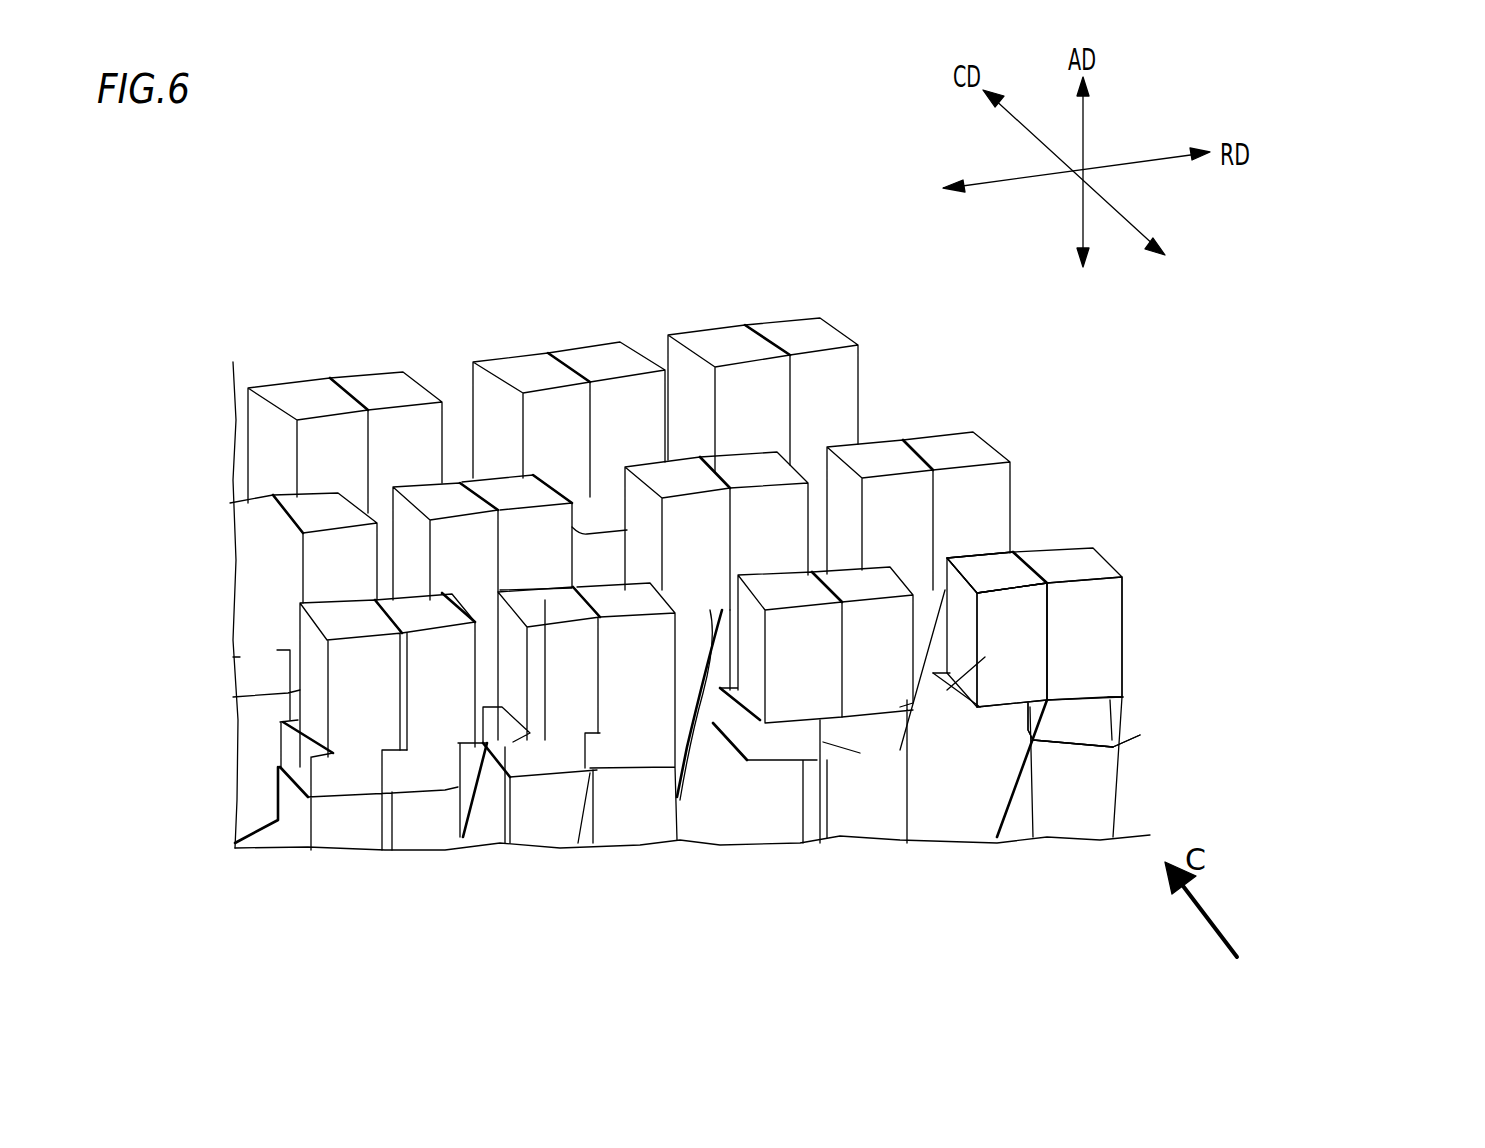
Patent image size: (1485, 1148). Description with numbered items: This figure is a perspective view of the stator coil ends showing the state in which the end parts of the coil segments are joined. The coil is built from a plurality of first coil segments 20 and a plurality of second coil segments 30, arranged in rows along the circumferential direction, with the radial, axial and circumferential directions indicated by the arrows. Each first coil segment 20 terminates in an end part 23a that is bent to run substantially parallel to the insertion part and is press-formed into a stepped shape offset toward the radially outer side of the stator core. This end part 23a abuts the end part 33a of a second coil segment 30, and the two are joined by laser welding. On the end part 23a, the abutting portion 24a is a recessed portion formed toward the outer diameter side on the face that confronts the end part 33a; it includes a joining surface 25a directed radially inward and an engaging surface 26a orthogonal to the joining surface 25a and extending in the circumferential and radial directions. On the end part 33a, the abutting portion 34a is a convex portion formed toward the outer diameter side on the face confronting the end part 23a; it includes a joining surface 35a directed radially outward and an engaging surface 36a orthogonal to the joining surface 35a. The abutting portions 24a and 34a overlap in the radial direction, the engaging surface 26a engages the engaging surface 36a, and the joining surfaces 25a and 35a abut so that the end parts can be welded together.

The first coil segment 20 is at (843, 830).
The second coil segment 30 is at (780, 805).
The end part 23a is at (1100, 627).
The abutting portion 24a is at (1157, 363).
The joining surface 25a is at (1045, 620).
The engaging surface 26a is at (1047, 697).
The end part 33a is at (985, 657).
The abutting portion 34a is at (1333, 660).
The joining surface 35a is at (1057, 655).
The engaging surface 36a is at (1047, 710).